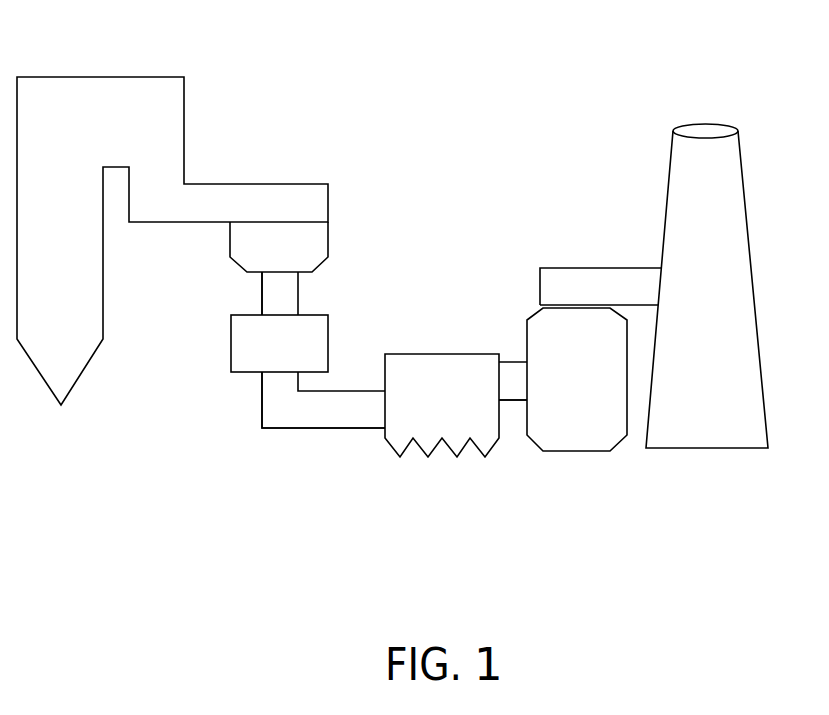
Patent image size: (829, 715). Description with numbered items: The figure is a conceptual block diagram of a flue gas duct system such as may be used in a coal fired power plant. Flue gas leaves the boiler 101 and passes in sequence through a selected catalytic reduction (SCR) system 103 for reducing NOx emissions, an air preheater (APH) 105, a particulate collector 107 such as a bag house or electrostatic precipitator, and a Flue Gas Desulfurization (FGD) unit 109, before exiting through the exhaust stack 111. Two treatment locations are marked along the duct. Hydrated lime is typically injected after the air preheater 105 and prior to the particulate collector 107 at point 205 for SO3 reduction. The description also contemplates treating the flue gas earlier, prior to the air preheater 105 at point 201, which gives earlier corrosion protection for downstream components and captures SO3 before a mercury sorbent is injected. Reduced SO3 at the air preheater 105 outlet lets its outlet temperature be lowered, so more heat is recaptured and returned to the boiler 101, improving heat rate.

The boiler 101 is at (127, 77).
The selected catalytic reduction (SCR) system 103 is at (328, 235).
The air preheater (APH) 105 is at (328, 322).
The particulate collector 107 is at (462, 354).
The Flue Gas Desulfurization (FGD) unit 109 is at (577, 451).
The exhaust stack 111 is at (745, 165).
The point prior to the APH 201 is at (250, 293).
The point after the APH 205 is at (311, 442).